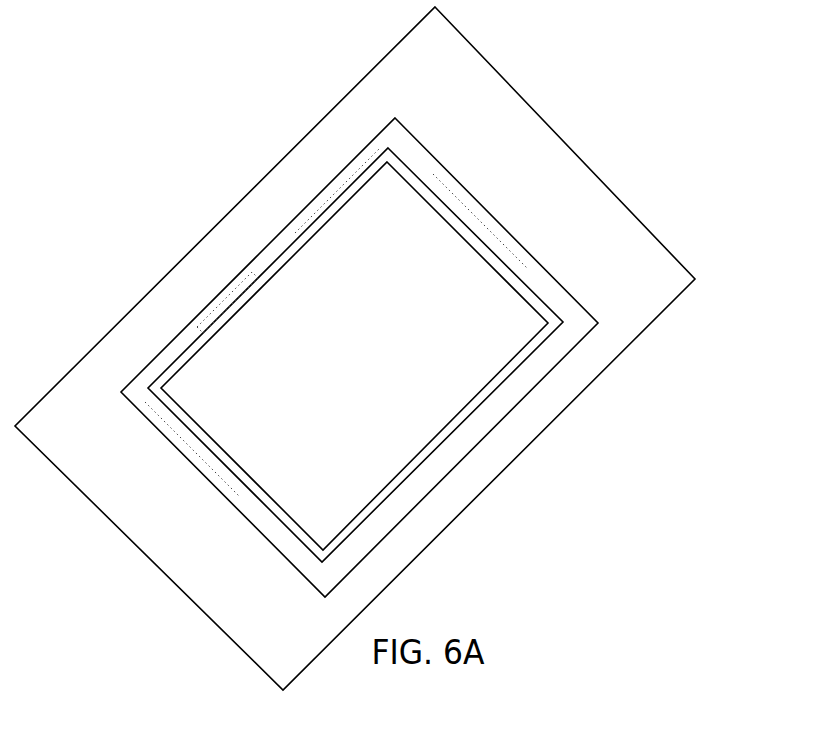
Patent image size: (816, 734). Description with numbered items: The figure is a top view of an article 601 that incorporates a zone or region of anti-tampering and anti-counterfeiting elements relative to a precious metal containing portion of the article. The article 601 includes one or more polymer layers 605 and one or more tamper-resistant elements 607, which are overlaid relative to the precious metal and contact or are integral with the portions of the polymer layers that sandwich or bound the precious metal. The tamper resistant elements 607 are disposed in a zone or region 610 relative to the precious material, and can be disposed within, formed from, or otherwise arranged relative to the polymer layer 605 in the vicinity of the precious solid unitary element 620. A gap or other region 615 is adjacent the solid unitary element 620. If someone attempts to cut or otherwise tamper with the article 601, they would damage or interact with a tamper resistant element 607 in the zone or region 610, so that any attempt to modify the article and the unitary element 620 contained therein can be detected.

The article 601 is at (152, 95).
The polymer layer 605 is at (630, 345).
The tamper-resistant element 607 is at (488, 225).
The zone or region 610 is at (526, 397).
The gap or other region 615 is at (426, 457).
The solid unitary element 620 is at (343, 532).